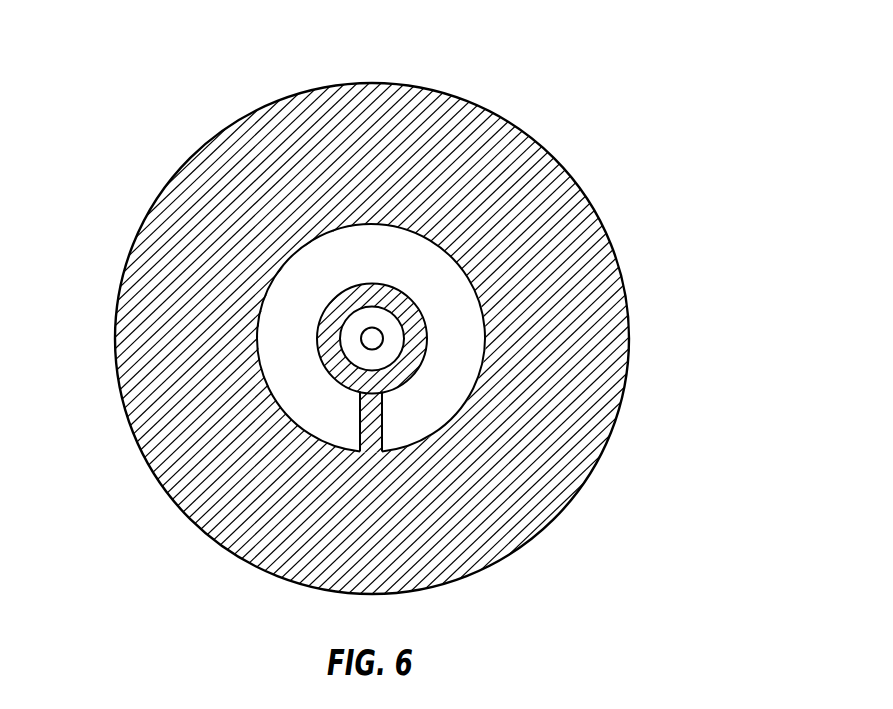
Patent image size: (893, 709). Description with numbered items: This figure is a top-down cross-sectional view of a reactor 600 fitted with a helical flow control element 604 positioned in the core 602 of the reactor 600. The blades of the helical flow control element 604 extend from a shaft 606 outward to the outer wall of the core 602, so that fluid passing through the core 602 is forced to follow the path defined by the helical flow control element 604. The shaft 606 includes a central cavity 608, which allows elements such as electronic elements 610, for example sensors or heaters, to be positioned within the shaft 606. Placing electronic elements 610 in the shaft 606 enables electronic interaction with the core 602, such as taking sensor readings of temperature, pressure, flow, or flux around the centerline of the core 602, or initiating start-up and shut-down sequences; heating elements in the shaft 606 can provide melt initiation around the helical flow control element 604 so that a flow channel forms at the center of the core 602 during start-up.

The reactor 600 is at (480, 45).
The core 602 is at (353, 338).
The helical flow control element 604 is at (323, 409).
The shaft 606 is at (372, 298).
The central cavity 608 is at (267, 280).
The electronic elements 610 is at (385, 338).